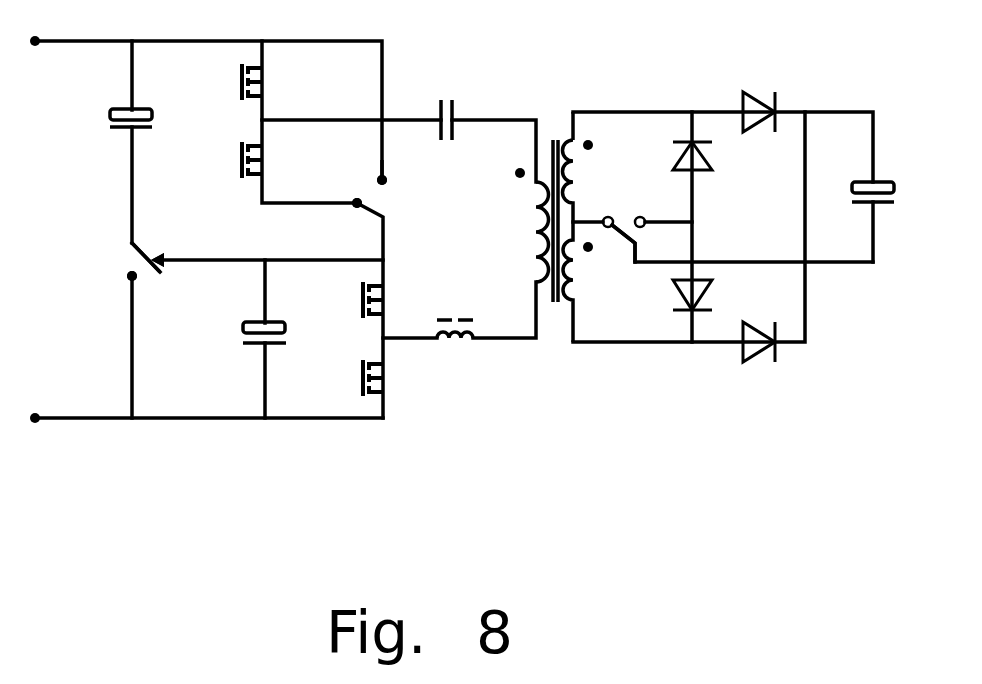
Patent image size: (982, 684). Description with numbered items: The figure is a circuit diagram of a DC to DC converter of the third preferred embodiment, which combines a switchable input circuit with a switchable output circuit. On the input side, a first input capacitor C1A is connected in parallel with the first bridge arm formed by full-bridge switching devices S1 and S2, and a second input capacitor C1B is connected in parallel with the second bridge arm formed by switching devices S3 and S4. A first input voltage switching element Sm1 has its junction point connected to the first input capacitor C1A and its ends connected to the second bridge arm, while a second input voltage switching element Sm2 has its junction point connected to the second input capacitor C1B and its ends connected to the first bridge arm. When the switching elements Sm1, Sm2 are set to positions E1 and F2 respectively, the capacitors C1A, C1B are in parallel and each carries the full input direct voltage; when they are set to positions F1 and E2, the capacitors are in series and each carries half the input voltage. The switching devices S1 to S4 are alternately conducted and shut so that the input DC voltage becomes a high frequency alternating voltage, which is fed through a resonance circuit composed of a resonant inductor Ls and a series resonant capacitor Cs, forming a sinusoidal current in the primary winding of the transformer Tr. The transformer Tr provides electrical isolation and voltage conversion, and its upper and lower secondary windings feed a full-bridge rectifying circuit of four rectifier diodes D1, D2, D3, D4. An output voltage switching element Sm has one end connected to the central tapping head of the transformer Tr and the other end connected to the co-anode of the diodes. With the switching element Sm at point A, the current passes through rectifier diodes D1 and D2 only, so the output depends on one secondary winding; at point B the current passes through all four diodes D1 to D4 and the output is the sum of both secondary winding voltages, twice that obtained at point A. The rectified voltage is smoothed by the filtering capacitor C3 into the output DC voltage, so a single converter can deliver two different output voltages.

The first input capacitor C1A is at (102, 114).
The second input capacitor C1B is at (228, 330).
The filtering capacitor C3 is at (861, 172).
The series resonant capacitor Cs is at (450, 103).
The resonant inductor Ls is at (455, 348).
The full-bridge switching device S1 is at (224, 82).
The full-bridge switching device S2 is at (224, 160).
The full-bridge switching device S3 is at (348, 300).
The full-bridge switching device S4 is at (348, 379).
The first input voltage switching element Sm1 is at (123, 257).
The second input voltage switching element Sm2 is at (355, 181).
The output voltage switching element Sm is at (618, 247).
The switching position of first input voltage switching element E1 is at (118, 289).
The switching position of second input voltage switching element E2 is at (350, 216).
The switching position of first input voltage switching element F1 is at (169, 250).
The switching position of second input voltage switching element F2 is at (403, 172).
The transformer Tr is at (533, 227).
The point A is at (604, 211).
The point B is at (638, 211).
The rectifier diode D1 is at (759, 124).
The rectifier diode D2 is at (759, 327).
The rectifier diode D3 is at (674, 152).
The rectifier diode D4 is at (674, 303).